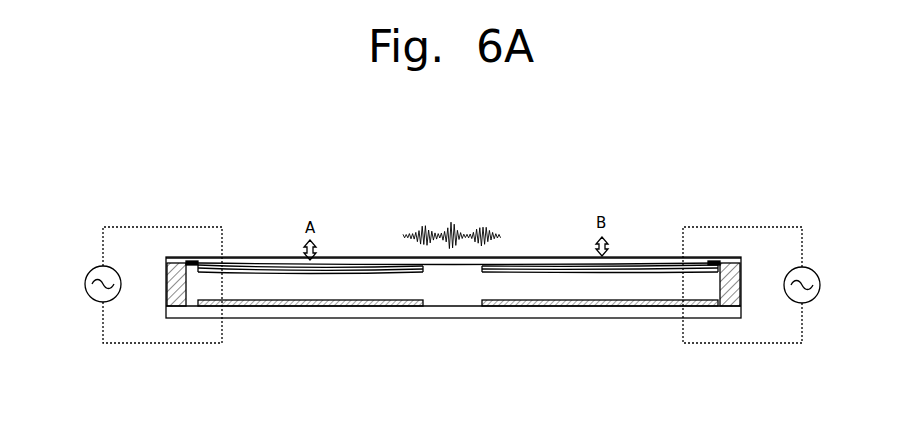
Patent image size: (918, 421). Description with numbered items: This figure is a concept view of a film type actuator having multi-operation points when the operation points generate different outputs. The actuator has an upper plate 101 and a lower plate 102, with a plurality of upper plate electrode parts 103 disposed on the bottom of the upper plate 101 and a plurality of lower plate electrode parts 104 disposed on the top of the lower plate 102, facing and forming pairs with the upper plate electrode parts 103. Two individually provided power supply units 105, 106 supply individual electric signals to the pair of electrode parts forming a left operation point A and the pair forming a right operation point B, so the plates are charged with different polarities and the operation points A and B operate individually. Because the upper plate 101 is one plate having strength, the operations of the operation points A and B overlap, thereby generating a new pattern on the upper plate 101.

The upper plate 101 is at (272, 258).
The lower plate 102 is at (283, 307).
The upper plate electrode part 103 is at (367, 268).
The lower plate electrode part 104 is at (350, 307).
The power supply unit 105 is at (94, 303).
The power supply unit 106 is at (808, 303).